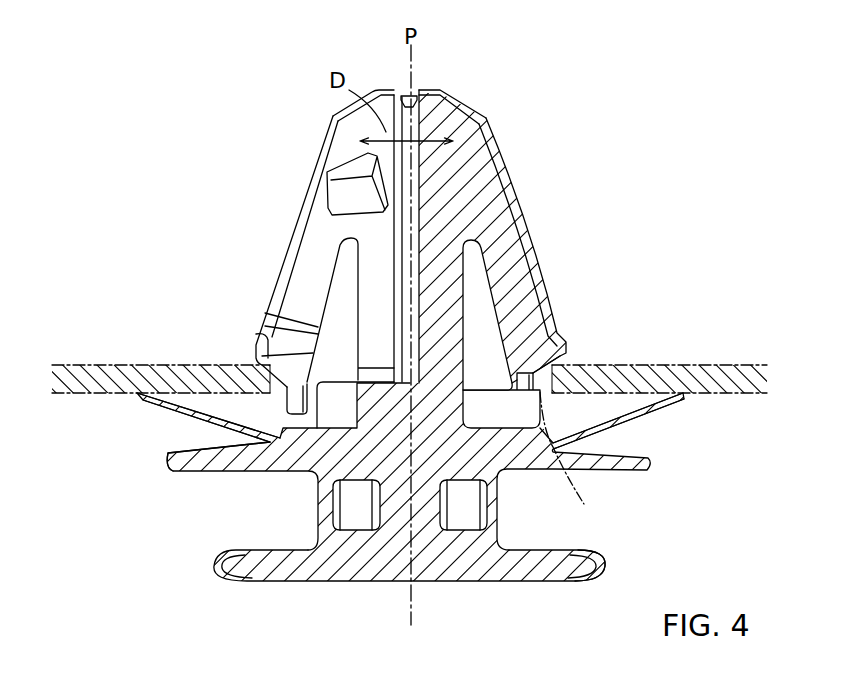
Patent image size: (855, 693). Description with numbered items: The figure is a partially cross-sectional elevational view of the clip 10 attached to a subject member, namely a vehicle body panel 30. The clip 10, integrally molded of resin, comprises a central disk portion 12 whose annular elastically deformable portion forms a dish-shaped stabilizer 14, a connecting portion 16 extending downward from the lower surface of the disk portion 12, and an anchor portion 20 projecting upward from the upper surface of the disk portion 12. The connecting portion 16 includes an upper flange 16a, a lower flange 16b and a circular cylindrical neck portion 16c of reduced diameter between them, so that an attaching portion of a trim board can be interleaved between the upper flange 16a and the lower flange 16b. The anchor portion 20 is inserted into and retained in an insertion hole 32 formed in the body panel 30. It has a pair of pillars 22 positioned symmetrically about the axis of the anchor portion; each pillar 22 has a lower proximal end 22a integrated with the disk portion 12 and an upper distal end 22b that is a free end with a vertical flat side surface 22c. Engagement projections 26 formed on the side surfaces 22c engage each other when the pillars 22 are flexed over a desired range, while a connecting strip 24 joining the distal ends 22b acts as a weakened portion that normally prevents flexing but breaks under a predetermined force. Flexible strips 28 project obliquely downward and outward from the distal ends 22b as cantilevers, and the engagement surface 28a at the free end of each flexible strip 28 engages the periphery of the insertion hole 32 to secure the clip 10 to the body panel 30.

The clip 10 is at (273, 96).
The disk portion 12 is at (521, 452).
The stabilizer 14 is at (190, 402).
The connecting portion 16 is at (229, 599).
The upper flange 16a is at (197, 471).
The lower flange 16b is at (573, 572).
The neck portion 16c is at (358, 512).
The anchor portion 20 is at (538, 133).
The pillar 22 is at (352, 284).
The proximal end 22a is at (442, 343).
The distal end 22b is at (445, 112).
The side surface 22c is at (386, 225).
The connecting strip 24 is at (406, 94).
The engagement projection 26 is at (346, 193).
The flexible strip 28 is at (305, 238).
The engagement surface 28a is at (287, 373).
The body panel 30 is at (137, 365).
The insertion hole 32 is at (573, 460).